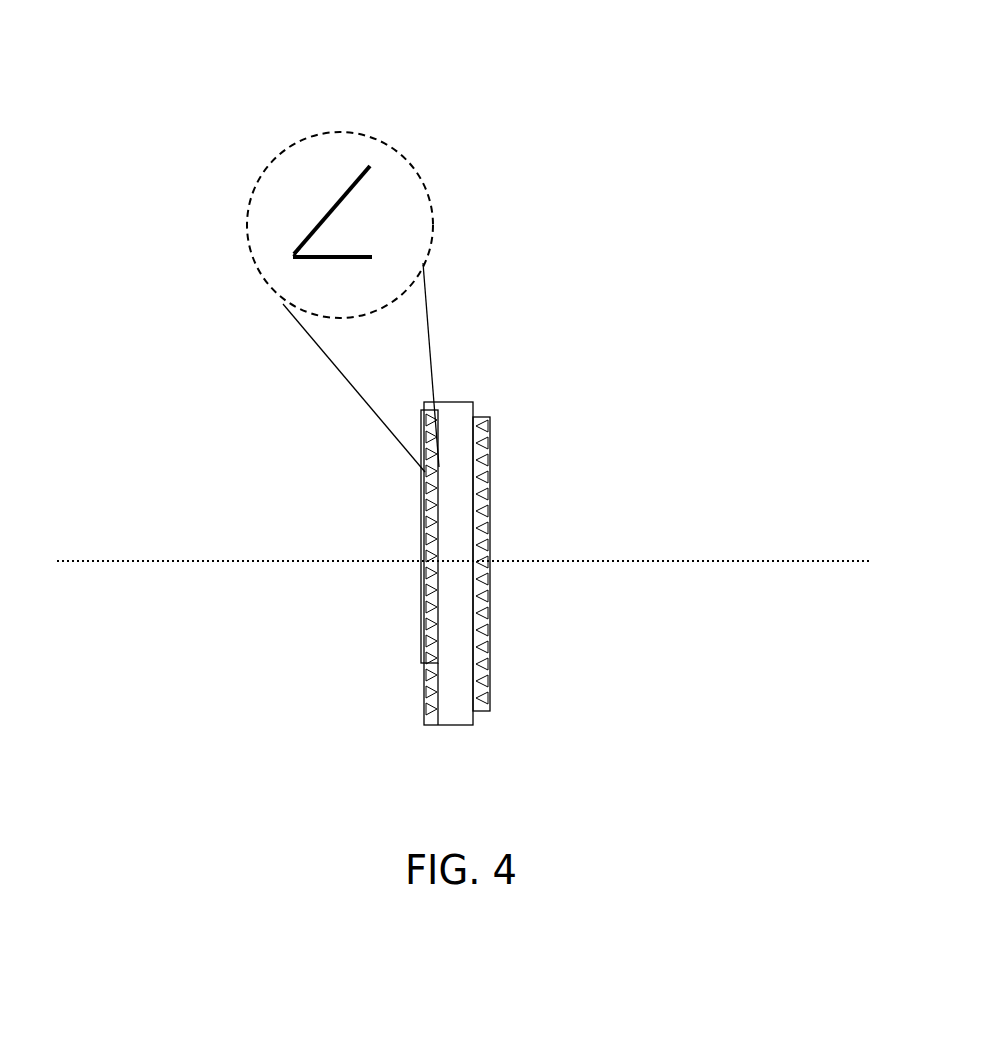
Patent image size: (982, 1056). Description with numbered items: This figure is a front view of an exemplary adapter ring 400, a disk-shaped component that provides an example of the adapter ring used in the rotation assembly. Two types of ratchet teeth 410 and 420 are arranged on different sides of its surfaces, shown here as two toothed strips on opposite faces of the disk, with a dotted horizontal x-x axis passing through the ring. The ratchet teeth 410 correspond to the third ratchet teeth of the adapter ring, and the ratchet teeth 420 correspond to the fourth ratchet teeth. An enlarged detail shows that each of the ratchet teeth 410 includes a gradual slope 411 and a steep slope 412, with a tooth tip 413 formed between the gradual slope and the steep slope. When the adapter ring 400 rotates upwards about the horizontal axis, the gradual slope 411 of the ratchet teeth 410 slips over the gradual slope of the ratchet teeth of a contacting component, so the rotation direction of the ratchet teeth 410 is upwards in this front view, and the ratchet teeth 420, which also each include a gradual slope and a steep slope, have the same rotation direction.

The adapter ring 400 is at (187, 122).
The ratchet teeth 410 is at (418, 561).
The ratchet teeth 420 is at (488, 556).
The gradual slope 411 is at (342, 197).
The steep slope 412 is at (338, 255).
The tooth tip 413 is at (295, 263).